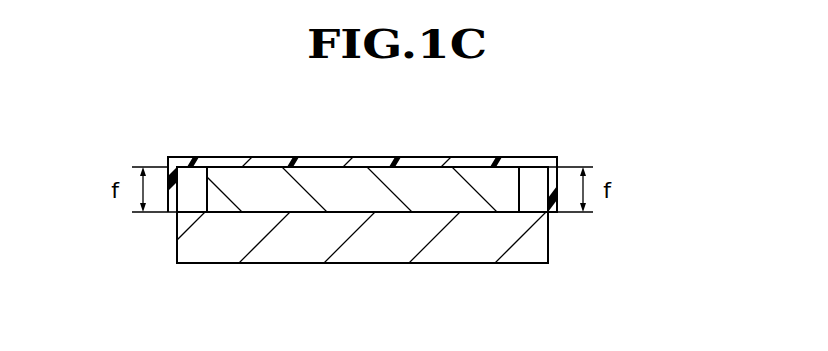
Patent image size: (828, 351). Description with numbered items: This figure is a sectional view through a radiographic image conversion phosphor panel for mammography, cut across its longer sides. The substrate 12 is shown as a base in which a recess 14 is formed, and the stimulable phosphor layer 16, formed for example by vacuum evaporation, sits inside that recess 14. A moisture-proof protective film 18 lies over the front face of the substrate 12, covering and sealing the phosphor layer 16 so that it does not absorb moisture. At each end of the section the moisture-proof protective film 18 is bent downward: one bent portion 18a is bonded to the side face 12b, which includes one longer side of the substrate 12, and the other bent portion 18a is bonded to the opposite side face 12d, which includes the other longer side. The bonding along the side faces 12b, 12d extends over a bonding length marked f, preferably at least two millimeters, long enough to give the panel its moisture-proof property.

The substrate 12 is at (230, 247).
The side face 12b is at (548, 237).
The side face 12d is at (177, 238).
The recess 14 is at (518, 190).
The stimulable phosphor layer 16 is at (410, 190).
The moisture-proof protective film 18 is at (237, 162).
The bent portion 18a is at (548, 175).